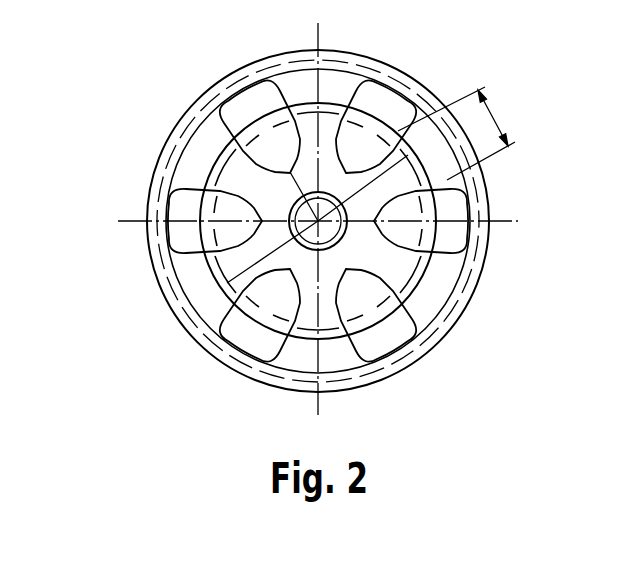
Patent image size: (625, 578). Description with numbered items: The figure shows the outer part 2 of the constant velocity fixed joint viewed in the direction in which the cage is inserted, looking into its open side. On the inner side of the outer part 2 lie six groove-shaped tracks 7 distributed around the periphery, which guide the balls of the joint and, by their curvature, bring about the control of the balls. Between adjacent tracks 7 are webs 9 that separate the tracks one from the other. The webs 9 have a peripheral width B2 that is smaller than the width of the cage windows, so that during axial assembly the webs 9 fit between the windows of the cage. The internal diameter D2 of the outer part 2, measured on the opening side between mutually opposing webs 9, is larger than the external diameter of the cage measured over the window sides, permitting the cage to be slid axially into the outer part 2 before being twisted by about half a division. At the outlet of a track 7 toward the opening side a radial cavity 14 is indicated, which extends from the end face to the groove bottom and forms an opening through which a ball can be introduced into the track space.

The outer part 2 is at (289, 210).
The tracks 7 is at (270, 143).
The webs 9 is at (300, 74).
The radial cavity 14 is at (259, 92).
The internal diameter D2 is at (245, 254).
The width of webs B2 is at (461, 133).